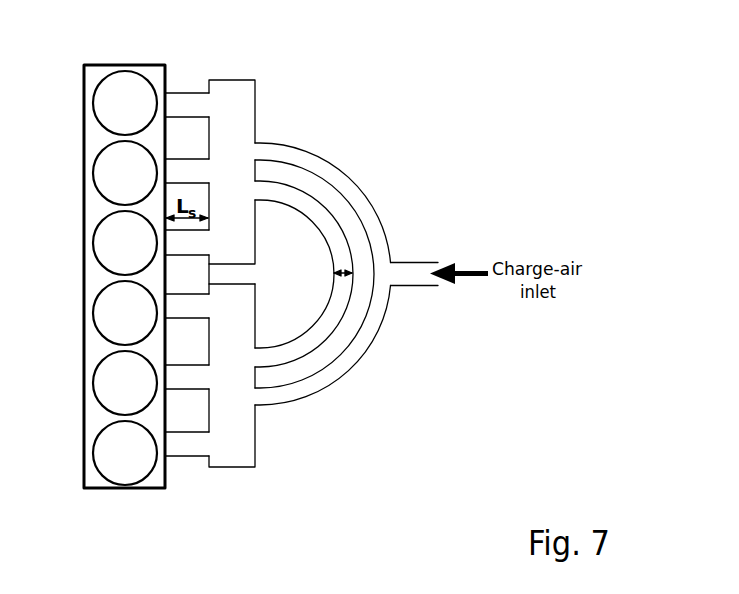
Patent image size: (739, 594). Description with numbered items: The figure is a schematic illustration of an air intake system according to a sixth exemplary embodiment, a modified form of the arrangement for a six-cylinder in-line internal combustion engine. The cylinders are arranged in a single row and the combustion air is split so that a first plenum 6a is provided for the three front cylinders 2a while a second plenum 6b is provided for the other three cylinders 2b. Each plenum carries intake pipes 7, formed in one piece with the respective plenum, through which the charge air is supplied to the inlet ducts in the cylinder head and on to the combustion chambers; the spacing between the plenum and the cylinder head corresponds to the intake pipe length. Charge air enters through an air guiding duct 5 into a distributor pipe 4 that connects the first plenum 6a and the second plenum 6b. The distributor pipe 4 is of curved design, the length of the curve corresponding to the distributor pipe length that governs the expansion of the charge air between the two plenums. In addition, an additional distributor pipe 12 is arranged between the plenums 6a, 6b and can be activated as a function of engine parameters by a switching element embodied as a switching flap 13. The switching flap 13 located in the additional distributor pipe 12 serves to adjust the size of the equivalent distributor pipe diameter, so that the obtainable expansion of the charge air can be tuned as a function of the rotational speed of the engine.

The front cylinders 2a is at (111, 326).
The cylinders 2b is at (111, 116).
The distributor pipe 4 is at (365, 198).
The air guiding duct 5 is at (420, 286).
The first plenum 6a is at (233, 448).
The second plenum 6b is at (228, 88).
The intake pipes 7 is at (183, 103).
The additional distributor pipe 12 is at (275, 345).
The switching flap 13 is at (338, 272).